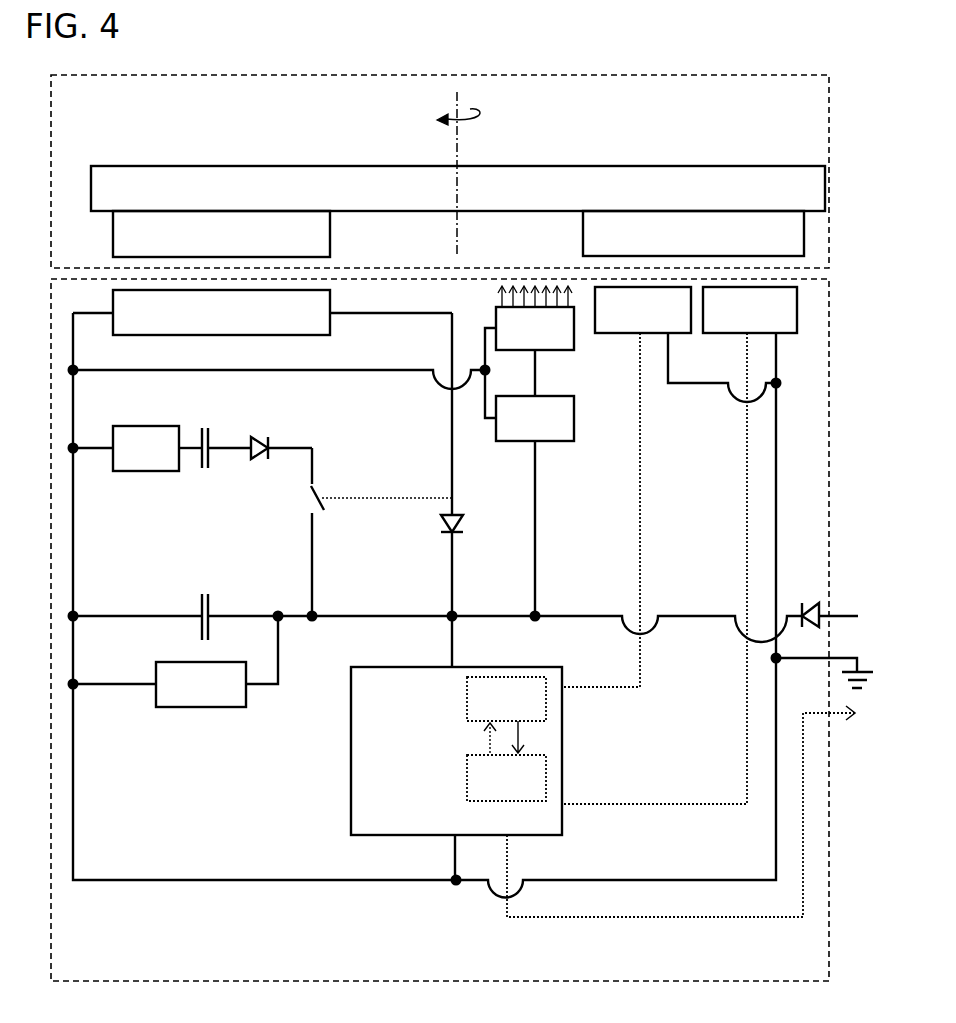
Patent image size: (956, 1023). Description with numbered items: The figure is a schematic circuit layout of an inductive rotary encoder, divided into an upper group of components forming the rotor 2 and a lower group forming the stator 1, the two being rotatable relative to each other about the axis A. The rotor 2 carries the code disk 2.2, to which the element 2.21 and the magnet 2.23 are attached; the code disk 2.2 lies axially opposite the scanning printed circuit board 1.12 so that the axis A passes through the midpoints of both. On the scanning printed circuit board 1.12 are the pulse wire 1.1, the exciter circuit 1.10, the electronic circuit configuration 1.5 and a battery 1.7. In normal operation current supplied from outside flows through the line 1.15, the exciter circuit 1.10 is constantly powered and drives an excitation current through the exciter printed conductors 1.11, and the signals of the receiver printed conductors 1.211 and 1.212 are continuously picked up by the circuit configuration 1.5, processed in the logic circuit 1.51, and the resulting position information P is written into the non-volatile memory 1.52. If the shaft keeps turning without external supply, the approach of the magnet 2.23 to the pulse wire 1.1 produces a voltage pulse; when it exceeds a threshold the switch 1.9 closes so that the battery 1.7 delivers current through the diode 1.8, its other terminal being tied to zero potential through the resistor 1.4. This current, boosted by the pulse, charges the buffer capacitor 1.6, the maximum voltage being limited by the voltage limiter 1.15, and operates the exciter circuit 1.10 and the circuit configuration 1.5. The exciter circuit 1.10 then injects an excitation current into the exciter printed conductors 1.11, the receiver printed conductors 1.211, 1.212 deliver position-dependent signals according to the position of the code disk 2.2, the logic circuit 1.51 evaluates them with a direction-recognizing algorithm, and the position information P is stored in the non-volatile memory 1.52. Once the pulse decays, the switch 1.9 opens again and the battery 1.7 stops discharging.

The stator 1 is at (440, 630).
The rotor 2 is at (440, 171).
The code disk 2.2 is at (458, 188).
The first sensor element of rotating part 2.21 is at (693, 235).
The magnet 2.23 is at (221, 235).
The axis A is at (457, 148).
The pulse wire 1.1 is at (262, 312).
The resistor 1.4 is at (137, 448).
The electronic circuit configuration 1.5 is at (456, 773).
The logic circuit 1.51 is at (506, 699).
The non-volatile memory 1.52 is at (506, 778).
The buffer capacitor 1.6 is at (198, 600).
The battery 1.7 is at (206, 470).
The diode 1.8 is at (260, 438).
The switch 1.9 is at (306, 500).
The exciter circuit 1.10 is at (535, 483).
The exciter printed conductors 1.11 is at (535, 318).
The scanning printed circuit board 1.12 is at (191, 850).
The line / voltage limiter 1.15 is at (696, 588).
The receiver printed conductor 1.211 is at (685, 344).
The receiver printed conductor 1.212 is at (750, 310).
The position information P is at (511, 741).